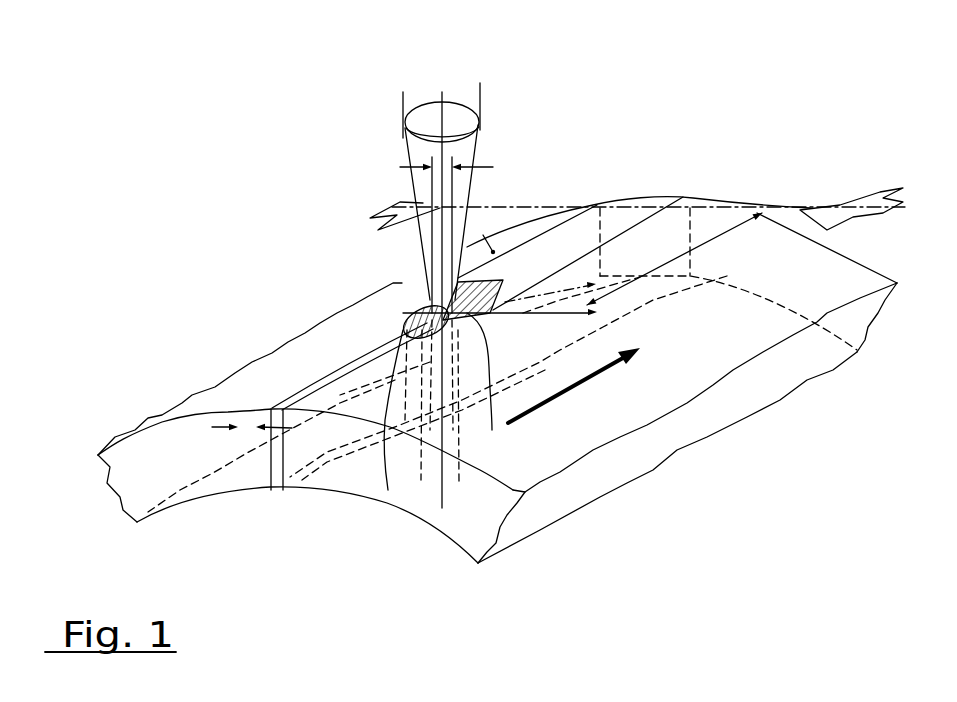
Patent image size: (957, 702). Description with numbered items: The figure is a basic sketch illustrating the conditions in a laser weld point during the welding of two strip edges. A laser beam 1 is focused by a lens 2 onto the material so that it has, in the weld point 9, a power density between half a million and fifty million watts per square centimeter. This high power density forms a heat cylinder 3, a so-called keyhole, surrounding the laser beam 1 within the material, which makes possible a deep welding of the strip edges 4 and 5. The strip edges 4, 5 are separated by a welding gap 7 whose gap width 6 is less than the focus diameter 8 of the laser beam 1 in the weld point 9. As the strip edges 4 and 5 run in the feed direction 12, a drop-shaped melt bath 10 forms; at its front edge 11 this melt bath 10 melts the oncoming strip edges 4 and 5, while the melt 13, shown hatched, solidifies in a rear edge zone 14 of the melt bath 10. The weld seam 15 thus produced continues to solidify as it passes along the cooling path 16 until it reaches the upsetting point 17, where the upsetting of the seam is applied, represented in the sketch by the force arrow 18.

The laser beam 1 is at (460, 153).
The lens 2 is at (422, 125).
The heat cylinder 3 is at (488, 340).
The strip edge 4 is at (271, 460).
The strip edge 5 is at (284, 458).
The gap width 6 is at (278, 432).
The welding gap 7 is at (353, 358).
The focus diameter 8 is at (483, 235).
The weld point 9 is at (432, 370).
The melt bath 10 is at (406, 297).
The front edge 11 is at (422, 342).
The feed direction 12 is at (597, 382).
The melt 13 is at (492, 330).
The rear edge zone 14 is at (507, 272).
The weld seam 15 is at (543, 257).
The cooling path 16 is at (703, 242).
The upsetting point 17 is at (630, 208).
The force arrow 18 is at (405, 211).